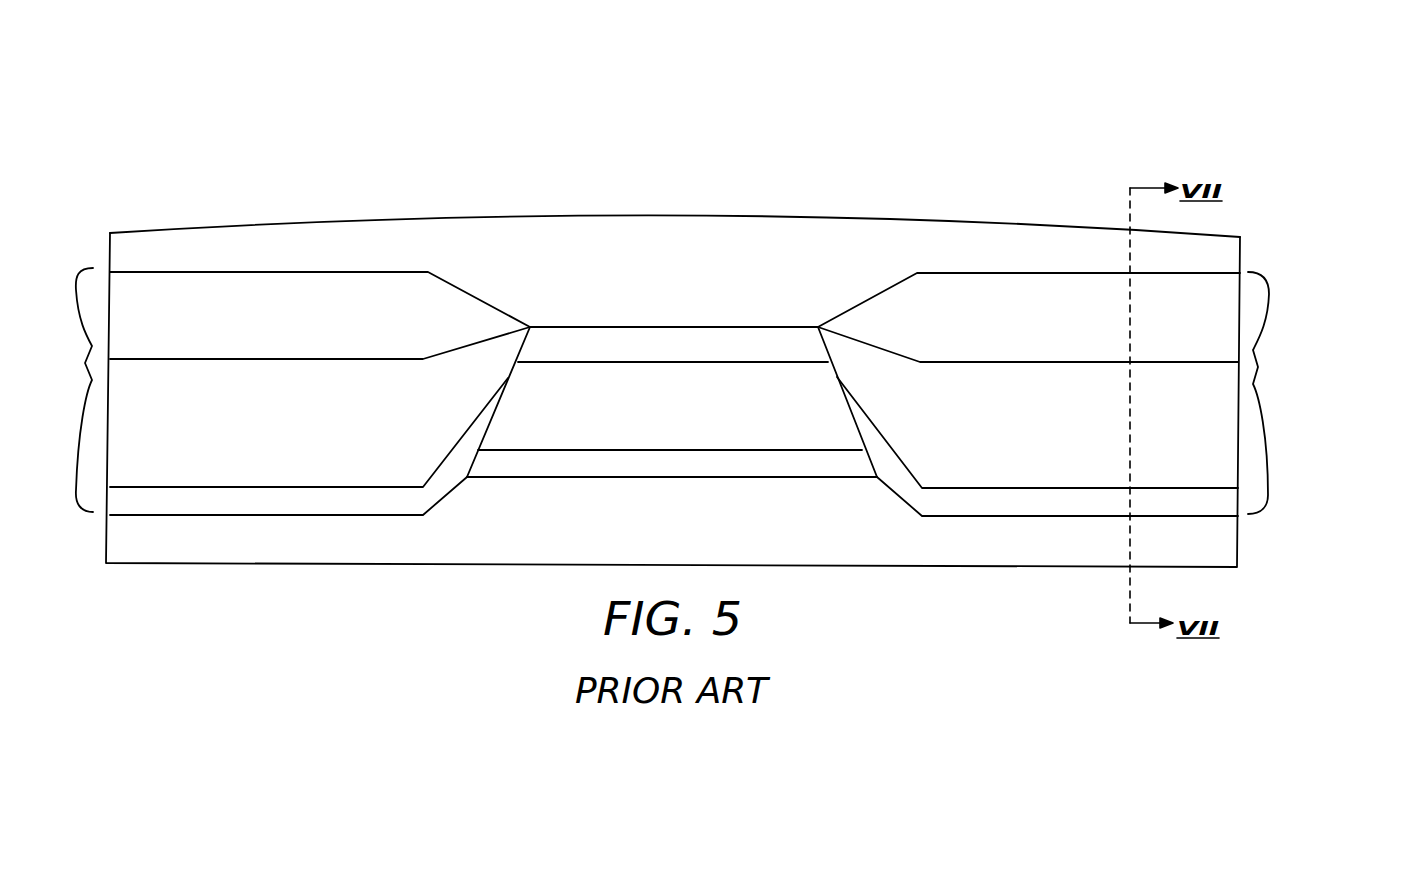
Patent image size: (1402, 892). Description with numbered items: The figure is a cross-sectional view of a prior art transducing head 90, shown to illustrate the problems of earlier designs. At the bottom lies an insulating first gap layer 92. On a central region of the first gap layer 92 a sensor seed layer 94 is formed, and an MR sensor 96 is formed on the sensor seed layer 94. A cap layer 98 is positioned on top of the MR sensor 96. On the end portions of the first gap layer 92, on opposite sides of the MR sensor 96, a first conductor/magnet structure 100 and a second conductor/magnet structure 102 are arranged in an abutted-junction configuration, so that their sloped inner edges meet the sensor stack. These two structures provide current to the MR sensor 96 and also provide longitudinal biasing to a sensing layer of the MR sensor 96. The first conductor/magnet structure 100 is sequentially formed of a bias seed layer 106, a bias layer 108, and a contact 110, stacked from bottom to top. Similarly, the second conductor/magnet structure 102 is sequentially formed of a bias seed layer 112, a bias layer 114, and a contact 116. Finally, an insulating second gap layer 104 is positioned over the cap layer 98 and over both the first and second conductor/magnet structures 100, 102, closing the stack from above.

The transducing head 90 is at (741, 316).
The first gap layer 92 is at (674, 535).
The sensor seed layer 94 is at (672, 464).
The MR sensor 96 is at (672, 402).
The cap layer 98 is at (673, 344).
The first conductor/magnet structure 100 is at (65, 390).
The second conductor/magnet structure 102 is at (1274, 393).
The second gap layer 104 is at (675, 248).
The bias seed layer 106 is at (288, 496).
The bias layer 108 is at (309, 432).
The contact 110 is at (320, 315).
The bias seed layer 112 is at (1057, 496).
The bias layer 114 is at (1037, 432).
The contact 116 is at (1029, 317).